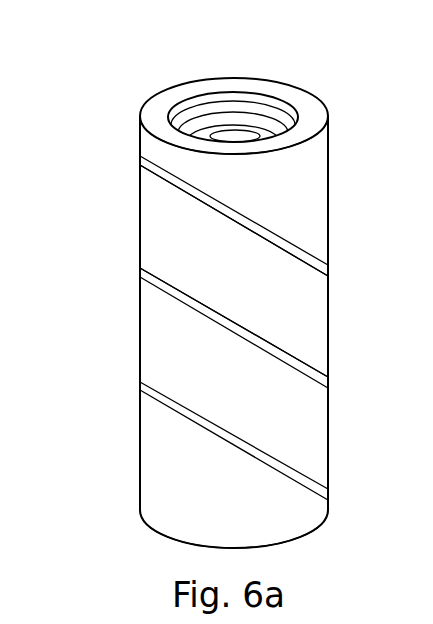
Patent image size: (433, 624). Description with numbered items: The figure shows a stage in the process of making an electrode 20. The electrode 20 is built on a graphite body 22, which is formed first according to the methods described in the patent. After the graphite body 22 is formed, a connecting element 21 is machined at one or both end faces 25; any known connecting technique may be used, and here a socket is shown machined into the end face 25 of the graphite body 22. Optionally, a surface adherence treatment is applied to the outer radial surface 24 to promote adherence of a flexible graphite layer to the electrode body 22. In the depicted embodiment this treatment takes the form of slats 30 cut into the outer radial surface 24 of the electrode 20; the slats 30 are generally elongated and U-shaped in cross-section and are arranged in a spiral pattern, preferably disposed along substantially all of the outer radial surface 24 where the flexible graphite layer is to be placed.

The electrode 20 is at (110, 167).
The connecting element 21 is at (242, 113).
The graphite body 22 is at (318, 193).
The outer radial surface 24 is at (160, 240).
The end face 25 is at (157, 110).
The slat 30 is at (180, 303).